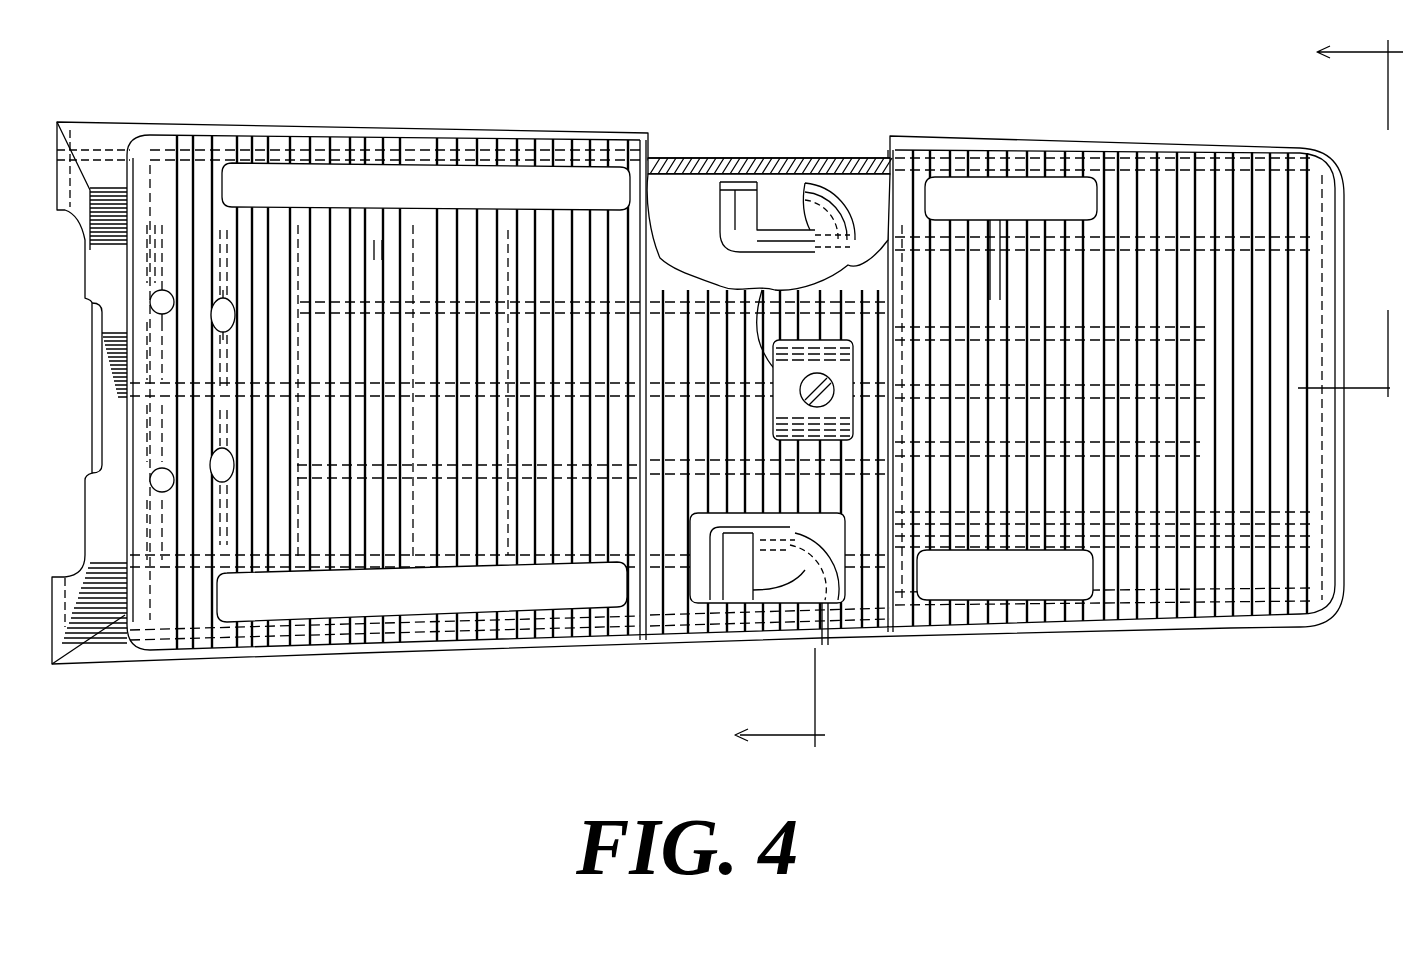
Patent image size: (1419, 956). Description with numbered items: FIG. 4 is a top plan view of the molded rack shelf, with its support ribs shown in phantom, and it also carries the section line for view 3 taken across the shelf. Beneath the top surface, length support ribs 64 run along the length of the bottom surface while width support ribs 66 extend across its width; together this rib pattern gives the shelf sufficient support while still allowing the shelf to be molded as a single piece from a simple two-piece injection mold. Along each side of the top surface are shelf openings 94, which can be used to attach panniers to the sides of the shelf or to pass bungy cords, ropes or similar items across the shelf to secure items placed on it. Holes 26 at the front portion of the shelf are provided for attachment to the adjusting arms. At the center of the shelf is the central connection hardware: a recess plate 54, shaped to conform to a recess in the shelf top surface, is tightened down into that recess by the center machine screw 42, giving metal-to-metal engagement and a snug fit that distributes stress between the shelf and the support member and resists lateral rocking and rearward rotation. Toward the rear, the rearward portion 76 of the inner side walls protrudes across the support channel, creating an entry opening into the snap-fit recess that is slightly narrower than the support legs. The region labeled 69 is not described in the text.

The holes 26 is at (184, 608).
The center machine screw 42 is at (780, 250).
The recess plate 54 is at (847, 342).
The length support ribs 64 is at (648, 215).
The width support ribs 66 is at (374, 250).
The slot rib 69 is at (995, 228).
The rearward portion of the inner side walls 76 is at (848, 245).
The shelf openings 94 is at (477, 188).
The section line 3- 3 is at (1059, 393).